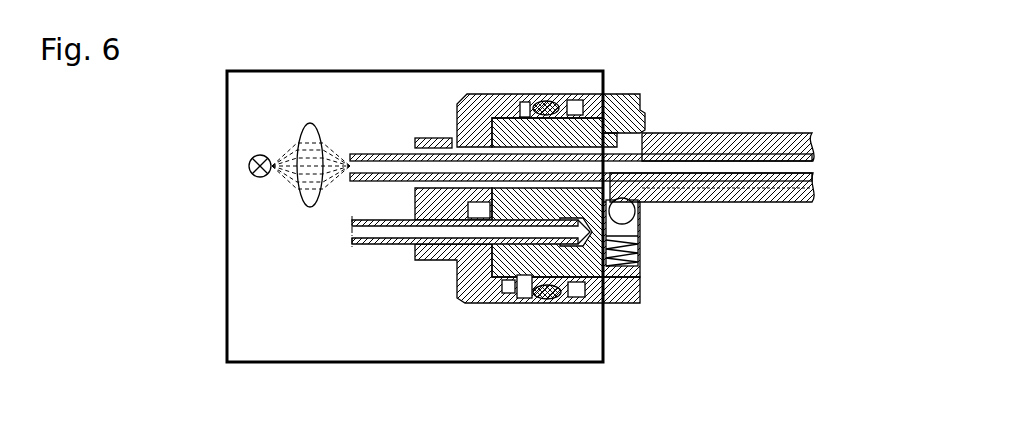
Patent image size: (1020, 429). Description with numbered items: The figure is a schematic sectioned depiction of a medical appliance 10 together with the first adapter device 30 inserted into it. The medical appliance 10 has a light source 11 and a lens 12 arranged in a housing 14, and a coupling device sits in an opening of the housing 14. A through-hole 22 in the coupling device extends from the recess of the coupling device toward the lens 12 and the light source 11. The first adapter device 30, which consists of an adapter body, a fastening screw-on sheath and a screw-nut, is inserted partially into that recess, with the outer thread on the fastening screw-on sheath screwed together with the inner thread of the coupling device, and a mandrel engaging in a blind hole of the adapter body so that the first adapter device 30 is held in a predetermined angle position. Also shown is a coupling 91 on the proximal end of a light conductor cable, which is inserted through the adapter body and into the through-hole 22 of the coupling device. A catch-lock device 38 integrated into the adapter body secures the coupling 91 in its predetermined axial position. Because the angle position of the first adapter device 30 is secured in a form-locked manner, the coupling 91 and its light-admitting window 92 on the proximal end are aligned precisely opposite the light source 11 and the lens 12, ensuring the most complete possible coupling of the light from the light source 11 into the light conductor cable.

The medical appliance 10 is at (620, 331).
The light source 11 is at (249, 164).
The lens 12 is at (300, 205).
The housing 14 is at (227, 301).
The through-hole 22 is at (438, 140).
The first adapter device 30 is at (640, 121).
The catch-lock device 38 is at (637, 245).
The coupling 91 is at (770, 203).
The light-admitting window 92 is at (352, 216).